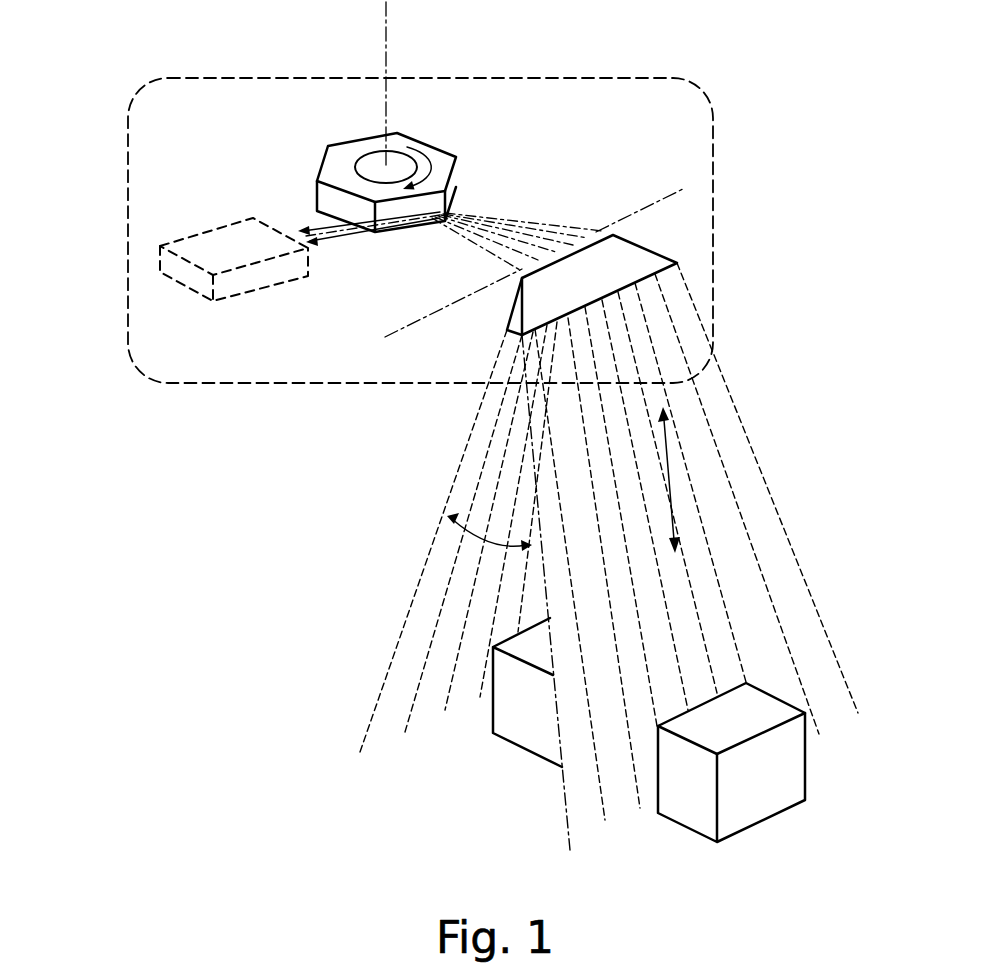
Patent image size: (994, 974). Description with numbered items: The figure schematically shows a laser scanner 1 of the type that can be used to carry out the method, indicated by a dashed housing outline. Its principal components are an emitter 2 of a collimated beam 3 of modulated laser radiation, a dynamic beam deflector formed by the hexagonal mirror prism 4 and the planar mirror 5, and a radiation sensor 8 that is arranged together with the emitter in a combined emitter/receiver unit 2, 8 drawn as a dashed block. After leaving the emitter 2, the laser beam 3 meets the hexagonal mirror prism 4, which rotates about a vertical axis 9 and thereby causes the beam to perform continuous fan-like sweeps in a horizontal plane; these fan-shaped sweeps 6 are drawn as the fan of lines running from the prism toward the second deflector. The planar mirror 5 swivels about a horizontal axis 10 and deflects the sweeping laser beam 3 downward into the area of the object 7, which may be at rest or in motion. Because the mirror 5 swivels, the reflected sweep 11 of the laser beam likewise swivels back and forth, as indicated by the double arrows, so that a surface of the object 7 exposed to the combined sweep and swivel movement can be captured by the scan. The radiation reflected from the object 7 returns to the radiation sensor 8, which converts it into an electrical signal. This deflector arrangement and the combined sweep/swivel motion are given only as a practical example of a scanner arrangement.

The laser scanner 1 is at (738, 136).
The emitter 2 is at (183, 192).
The radiation sensor 8 is at (231, 254).
The collimated beam 3 is at (315, 230).
The hexagonal mirror prism 4 is at (425, 145).
The planar mirror 5 is at (623, 257).
The fan-shaped sweeps 6 is at (492, 233).
The object 7 is at (785, 773).
The vertical axis 9 is at (387, 117).
The horizontal axis 10 is at (455, 307).
The reflected sweep 11 is at (376, 704).